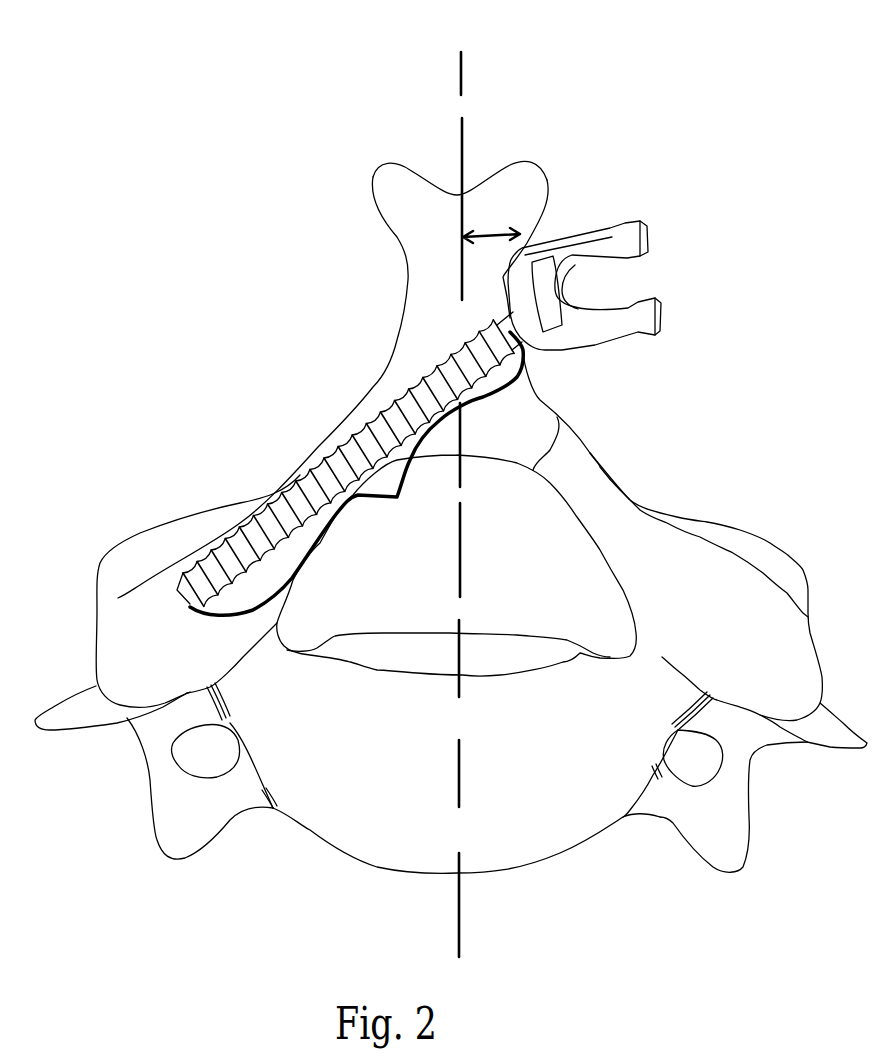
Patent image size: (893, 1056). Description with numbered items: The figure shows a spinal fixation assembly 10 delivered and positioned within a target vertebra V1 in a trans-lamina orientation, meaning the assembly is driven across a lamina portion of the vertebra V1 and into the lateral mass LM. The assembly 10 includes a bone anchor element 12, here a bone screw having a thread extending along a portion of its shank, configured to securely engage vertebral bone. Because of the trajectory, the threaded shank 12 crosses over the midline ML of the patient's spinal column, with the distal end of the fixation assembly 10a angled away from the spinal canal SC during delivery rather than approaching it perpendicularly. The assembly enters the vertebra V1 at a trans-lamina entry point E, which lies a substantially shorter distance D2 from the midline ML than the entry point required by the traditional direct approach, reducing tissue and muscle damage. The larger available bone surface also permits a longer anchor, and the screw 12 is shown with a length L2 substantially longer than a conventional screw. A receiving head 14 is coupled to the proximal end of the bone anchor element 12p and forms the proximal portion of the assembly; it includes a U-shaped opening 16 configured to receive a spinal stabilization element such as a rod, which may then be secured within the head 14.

The spinal fixation assembly 10 is at (305, 434).
The distal end of the fixation assembly 10a is at (161, 618).
The bone anchor element 12 is at (355, 453).
The proximal end of the bone anchor element 12p is at (500, 304).
The receiving head 14 is at (653, 234).
The U-shaped opening 16 is at (614, 293).
The midline ML is at (480, 76).
The target vertebra V1 is at (451, 486).
The trans-lamina entry point E is at (513, 270).
The distance from the midline to the entry point D2 is at (491, 220).
The spinal canal SC is at (392, 586).
The length of the bone anchor element L2 is at (452, 443).
The lateral mass LM is at (152, 680).